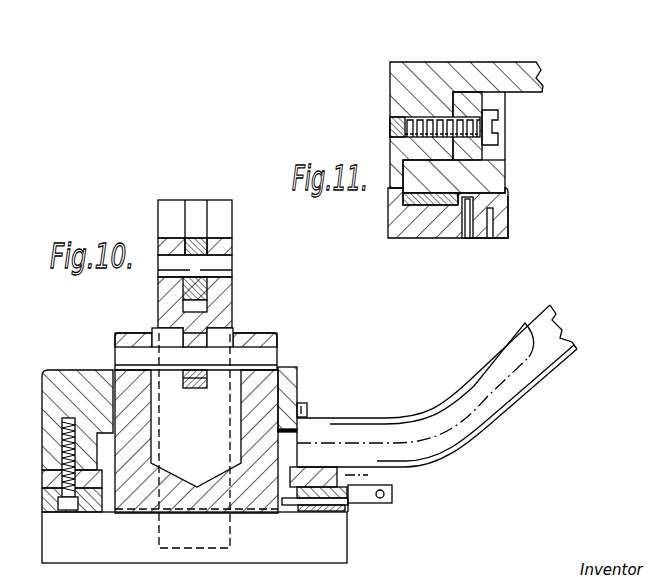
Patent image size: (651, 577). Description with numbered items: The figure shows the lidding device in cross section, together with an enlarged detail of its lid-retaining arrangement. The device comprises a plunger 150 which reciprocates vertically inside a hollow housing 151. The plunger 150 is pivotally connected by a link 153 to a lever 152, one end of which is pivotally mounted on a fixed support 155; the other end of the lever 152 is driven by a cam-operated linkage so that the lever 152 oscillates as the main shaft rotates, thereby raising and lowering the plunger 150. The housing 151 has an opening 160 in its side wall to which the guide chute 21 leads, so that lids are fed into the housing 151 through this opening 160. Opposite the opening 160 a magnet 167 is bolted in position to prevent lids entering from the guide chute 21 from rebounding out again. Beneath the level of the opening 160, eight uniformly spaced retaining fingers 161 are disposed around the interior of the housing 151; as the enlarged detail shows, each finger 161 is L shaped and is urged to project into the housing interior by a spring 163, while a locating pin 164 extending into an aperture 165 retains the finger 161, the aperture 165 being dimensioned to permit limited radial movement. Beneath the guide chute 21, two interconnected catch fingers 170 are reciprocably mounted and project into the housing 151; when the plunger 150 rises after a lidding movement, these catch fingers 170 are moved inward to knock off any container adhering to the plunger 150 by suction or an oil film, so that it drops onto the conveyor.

In FIG. 10, the guide chute 21 is at (367, 418).
In FIG. 10, the plunger 150 is at (113, 361).
In FIG. 10, the hollow housing 151 is at (57, 378).
In FIG. 11, the hollow housing 151 is at (400, 83).
In FIG. 10, the lever 152 is at (203, 238).
In FIG. 10, the link 153 is at (173, 296).
In FIG. 10, the fixed support 155 is at (167, 213).
In FIG. 10, the opening 160 is at (297, 437).
In FIG. 11, the retaining fingers 161 is at (504, 216).
In FIG. 11, the springs 163 is at (397, 227).
In FIG. 11, the locating pins 164 is at (467, 240).
In FIG. 11, the apertures 165 is at (482, 193).
In FIG. 11, the magnet 167 is at (463, 105).
In FIG. 10, the catch fingers 170 is at (373, 505).